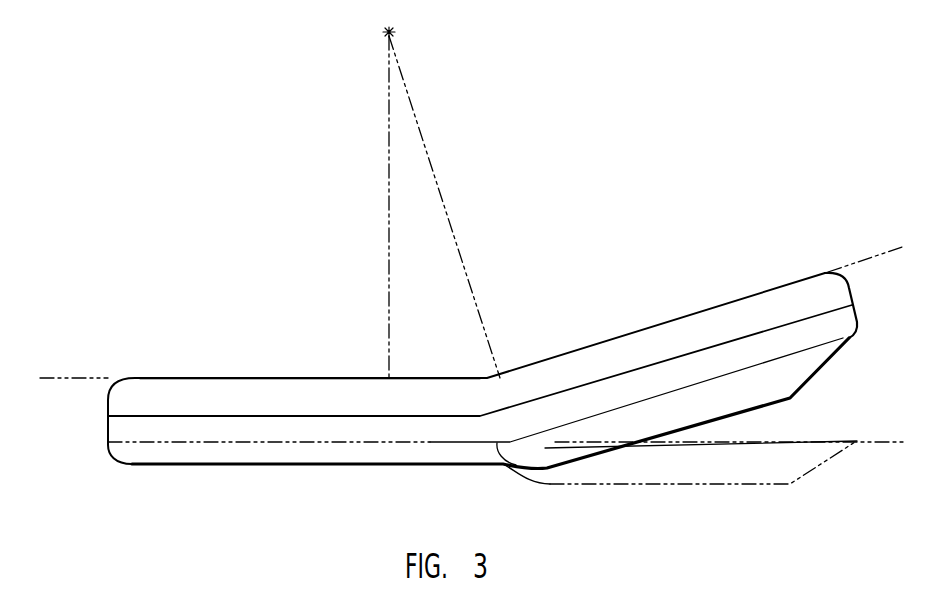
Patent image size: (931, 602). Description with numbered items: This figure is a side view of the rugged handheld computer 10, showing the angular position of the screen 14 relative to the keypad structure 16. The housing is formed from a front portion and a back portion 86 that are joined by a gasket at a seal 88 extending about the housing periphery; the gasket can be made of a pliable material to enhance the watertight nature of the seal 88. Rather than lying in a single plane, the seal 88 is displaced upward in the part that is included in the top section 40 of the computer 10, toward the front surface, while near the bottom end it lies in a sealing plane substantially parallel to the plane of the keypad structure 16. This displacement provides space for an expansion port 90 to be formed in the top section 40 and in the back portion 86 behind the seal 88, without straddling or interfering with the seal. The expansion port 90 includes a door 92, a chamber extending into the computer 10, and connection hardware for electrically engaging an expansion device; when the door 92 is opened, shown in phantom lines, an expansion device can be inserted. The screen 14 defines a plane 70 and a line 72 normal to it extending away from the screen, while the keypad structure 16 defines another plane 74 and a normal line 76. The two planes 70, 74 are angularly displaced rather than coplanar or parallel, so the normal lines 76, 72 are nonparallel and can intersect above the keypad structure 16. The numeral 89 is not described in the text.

The computer 10 is at (128, 470).
The screen 14 is at (707, 310).
The keypad structure 16 is at (360, 378).
The top section 40 is at (646, 312).
The plane 70 is at (880, 257).
The line 72 is at (455, 232).
The plane 74 is at (85, 378).
The line 76 is at (388, 230).
The back portion 86 is at (343, 465).
The seal 88 is at (140, 416).
The handle portion 89 is at (227, 387).
The expansion port 90 is at (800, 422).
The door 92 is at (683, 485).